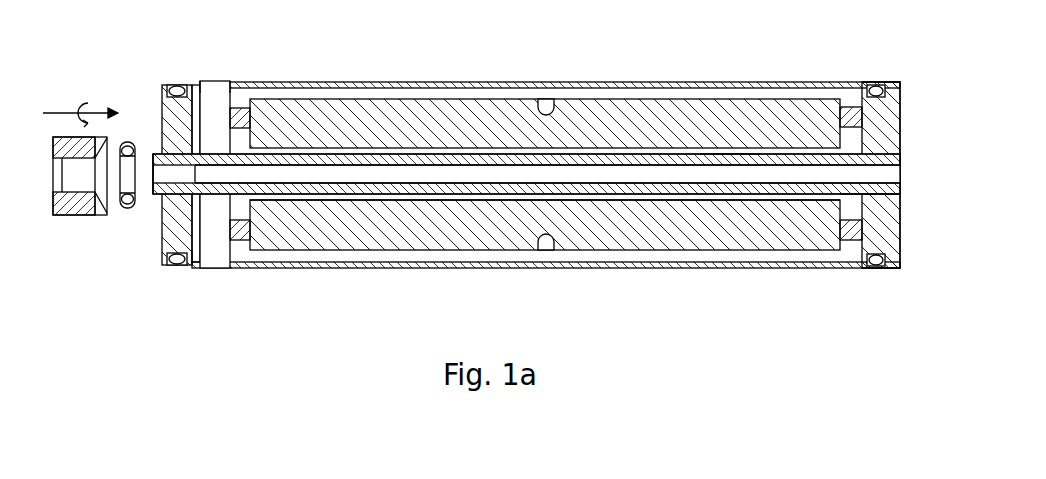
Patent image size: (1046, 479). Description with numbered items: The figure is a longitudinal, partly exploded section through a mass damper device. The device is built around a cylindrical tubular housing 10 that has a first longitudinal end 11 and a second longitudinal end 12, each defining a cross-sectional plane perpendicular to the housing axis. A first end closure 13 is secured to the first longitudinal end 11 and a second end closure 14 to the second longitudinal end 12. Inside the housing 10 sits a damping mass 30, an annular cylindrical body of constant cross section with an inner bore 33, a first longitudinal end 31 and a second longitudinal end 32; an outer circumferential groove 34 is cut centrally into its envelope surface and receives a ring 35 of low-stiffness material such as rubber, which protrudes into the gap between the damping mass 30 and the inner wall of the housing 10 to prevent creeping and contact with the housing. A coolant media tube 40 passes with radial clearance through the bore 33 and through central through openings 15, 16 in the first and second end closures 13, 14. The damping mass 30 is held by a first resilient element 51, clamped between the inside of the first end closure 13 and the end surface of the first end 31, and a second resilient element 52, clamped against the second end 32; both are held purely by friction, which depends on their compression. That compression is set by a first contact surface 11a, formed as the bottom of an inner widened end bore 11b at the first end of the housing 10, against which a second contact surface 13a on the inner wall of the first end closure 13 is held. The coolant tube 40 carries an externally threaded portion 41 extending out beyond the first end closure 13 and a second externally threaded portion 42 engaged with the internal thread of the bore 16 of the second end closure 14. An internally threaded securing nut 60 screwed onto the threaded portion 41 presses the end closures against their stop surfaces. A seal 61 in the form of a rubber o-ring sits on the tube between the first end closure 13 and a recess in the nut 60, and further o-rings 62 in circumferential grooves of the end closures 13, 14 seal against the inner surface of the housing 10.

The housing 10 is at (370, 82).
The first longitudinal end 11 is at (203, 90).
The first contact surface 11a is at (222, 88).
The end bore 11b is at (197, 86).
The second longitudinal end 12 is at (900, 84).
The first end closure 13 is at (162, 240).
The second contact surface 13a is at (193, 261).
The second end closure 14 is at (900, 107).
The central through opening 15 is at (170, 188).
The central through opening 16 is at (885, 157).
The damping mass 30 is at (645, 99).
The first longitudinal end 31 is at (251, 100).
The second longitudinal end 32 is at (846, 107).
The inner bore 33 is at (722, 154).
The outer circumferential groove 34 is at (553, 106).
The ring 35 is at (541, 97).
The coolant media tube 40 is at (665, 196).
The externally threaded portion 41 is at (155, 178).
The externally threaded portion 42 is at (882, 192).
The first resilient element 51 is at (230, 228).
The second resilient element 52 is at (845, 242).
The securing nut 60 is at (68, 215).
The seal 61 is at (128, 142).
The o-rings 62 is at (172, 86).